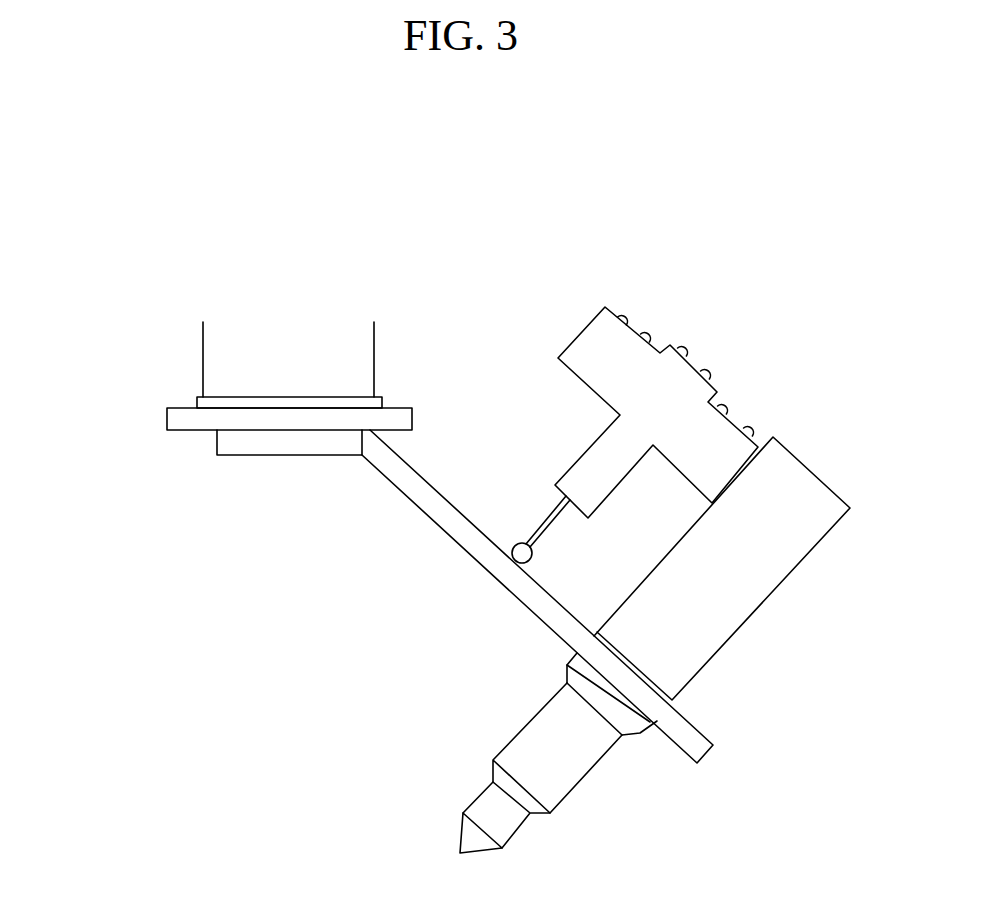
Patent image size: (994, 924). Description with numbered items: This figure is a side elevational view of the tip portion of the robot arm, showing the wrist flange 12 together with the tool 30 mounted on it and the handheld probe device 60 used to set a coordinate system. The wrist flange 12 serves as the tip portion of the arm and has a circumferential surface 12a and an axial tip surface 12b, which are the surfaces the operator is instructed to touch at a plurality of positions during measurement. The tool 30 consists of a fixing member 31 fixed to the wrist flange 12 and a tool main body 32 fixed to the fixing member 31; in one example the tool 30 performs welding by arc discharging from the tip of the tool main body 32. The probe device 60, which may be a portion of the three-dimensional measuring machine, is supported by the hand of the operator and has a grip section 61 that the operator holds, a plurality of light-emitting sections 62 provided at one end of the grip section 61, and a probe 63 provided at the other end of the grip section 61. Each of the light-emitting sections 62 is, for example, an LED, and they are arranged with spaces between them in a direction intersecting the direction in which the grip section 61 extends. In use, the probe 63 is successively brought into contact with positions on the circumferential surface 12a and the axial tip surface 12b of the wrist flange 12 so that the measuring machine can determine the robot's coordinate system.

The wrist flange 12 is at (355, 370).
The circumferential surface 12a is at (167, 418).
The axial tip surface 12b is at (185, 433).
The tool 30 is at (628, 641).
The fixing member 31 is at (708, 752).
The tool main body 32 is at (743, 625).
The probe device 60 is at (640, 389).
The grip section 61 is at (590, 447).
The light-emitting sections 62 is at (623, 312).
The probe 63 is at (537, 527).